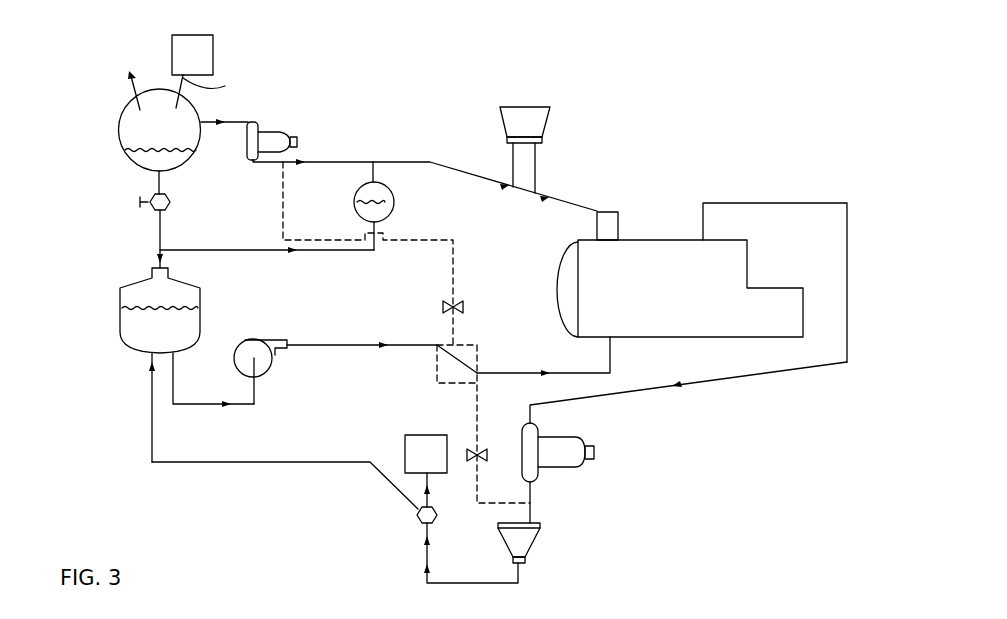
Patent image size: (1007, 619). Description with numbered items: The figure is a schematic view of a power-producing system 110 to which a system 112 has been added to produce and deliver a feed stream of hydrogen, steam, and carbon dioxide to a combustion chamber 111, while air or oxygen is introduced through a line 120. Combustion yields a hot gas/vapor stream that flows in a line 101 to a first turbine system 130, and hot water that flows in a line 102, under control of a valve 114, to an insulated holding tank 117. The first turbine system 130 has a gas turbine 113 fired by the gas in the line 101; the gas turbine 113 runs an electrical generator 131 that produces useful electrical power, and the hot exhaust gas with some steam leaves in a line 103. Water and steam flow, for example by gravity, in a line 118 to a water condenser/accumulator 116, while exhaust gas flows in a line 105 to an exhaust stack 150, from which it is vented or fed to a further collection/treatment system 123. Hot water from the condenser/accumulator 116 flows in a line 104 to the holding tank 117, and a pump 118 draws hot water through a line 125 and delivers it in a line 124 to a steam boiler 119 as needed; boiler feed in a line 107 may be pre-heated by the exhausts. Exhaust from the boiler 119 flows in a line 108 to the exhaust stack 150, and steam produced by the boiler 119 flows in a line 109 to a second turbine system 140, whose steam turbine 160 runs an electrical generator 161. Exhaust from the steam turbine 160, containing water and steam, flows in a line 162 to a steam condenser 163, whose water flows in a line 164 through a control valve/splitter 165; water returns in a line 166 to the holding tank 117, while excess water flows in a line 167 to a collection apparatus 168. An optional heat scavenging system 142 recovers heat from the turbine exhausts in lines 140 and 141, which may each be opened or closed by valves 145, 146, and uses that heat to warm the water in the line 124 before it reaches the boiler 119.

The line 101 is at (207, 118).
The line 102 is at (158, 180).
The line 103 is at (345, 168).
The line 104 is at (318, 252).
The line 105 is at (403, 162).
The line 107 is at (508, 372).
The line 108 is at (568, 200).
The line 109 is at (793, 203).
The system 110 is at (382, 108).
The combustion chamber 111 is at (118, 128).
The system 112 is at (182, 45).
The gas turbine 113 is at (250, 174).
The valve 114 is at (148, 203).
The water condenser/accumulator 116 is at (390, 215).
The insulated holding tank 117 is at (133, 283).
The pump 118 is at (378, 172).
The steam boiler 119 is at (567, 278).
The line 120 is at (125, 85).
The collection/treatment system 123 is at (550, 117).
The line 124 is at (403, 345).
The line 125 is at (255, 392).
The first turbine system 130 is at (183, 80).
The electrical generator 131 is at (297, 142).
The second turbine system 140 is at (426, 242).
The line 141 is at (475, 410).
The heat scavenging system 142 is at (436, 372).
The valve 145 is at (466, 307).
The valve 146 is at (487, 455).
The exhaust stack 150 is at (537, 155).
The steam turbine 160 is at (537, 475).
The electrical generator 161 is at (575, 428).
The line 162 is at (530, 497).
The steam condenser 163 is at (527, 535).
The line 164 is at (423, 547).
The control valve/splitter 165 is at (417, 513).
The line 166 is at (372, 467).
The line 167 is at (413, 497).
The collection apparatus 168 is at (412, 452).